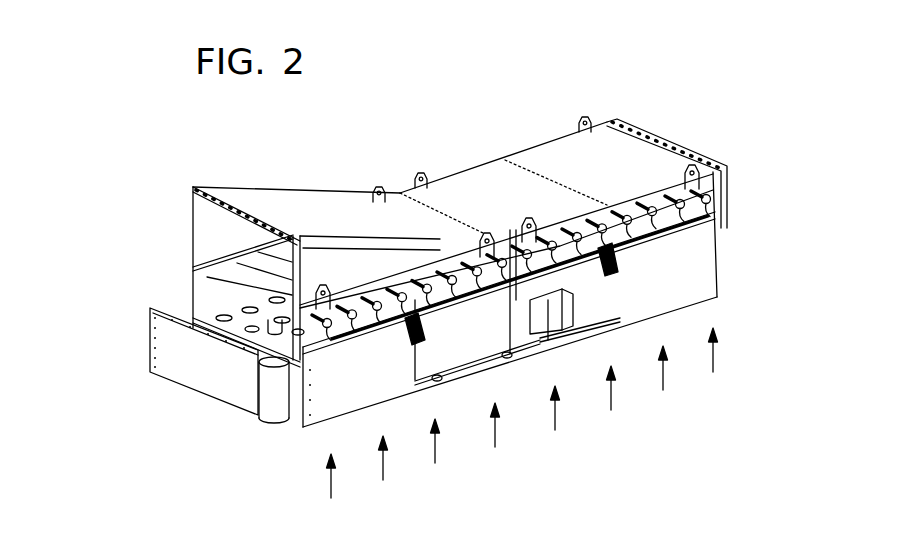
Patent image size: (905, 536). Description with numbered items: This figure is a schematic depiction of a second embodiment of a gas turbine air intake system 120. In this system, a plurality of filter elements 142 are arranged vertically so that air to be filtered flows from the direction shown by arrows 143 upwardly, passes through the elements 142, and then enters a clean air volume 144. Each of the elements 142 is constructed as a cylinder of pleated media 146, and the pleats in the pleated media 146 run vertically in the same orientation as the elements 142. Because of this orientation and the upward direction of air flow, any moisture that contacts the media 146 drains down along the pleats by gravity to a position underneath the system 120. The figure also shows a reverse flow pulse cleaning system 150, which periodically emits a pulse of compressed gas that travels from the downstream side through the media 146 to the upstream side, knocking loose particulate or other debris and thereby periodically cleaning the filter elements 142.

The gas turbine air intake system 120 is at (604, 72).
The clean air volume 144 is at (202, 221).
The reverse flow pulse cleaning system 150 is at (340, 332).
The pleated media 146 is at (268, 406).
The filter elements 142 is at (275, 418).
The arrows 143 is at (330, 470).